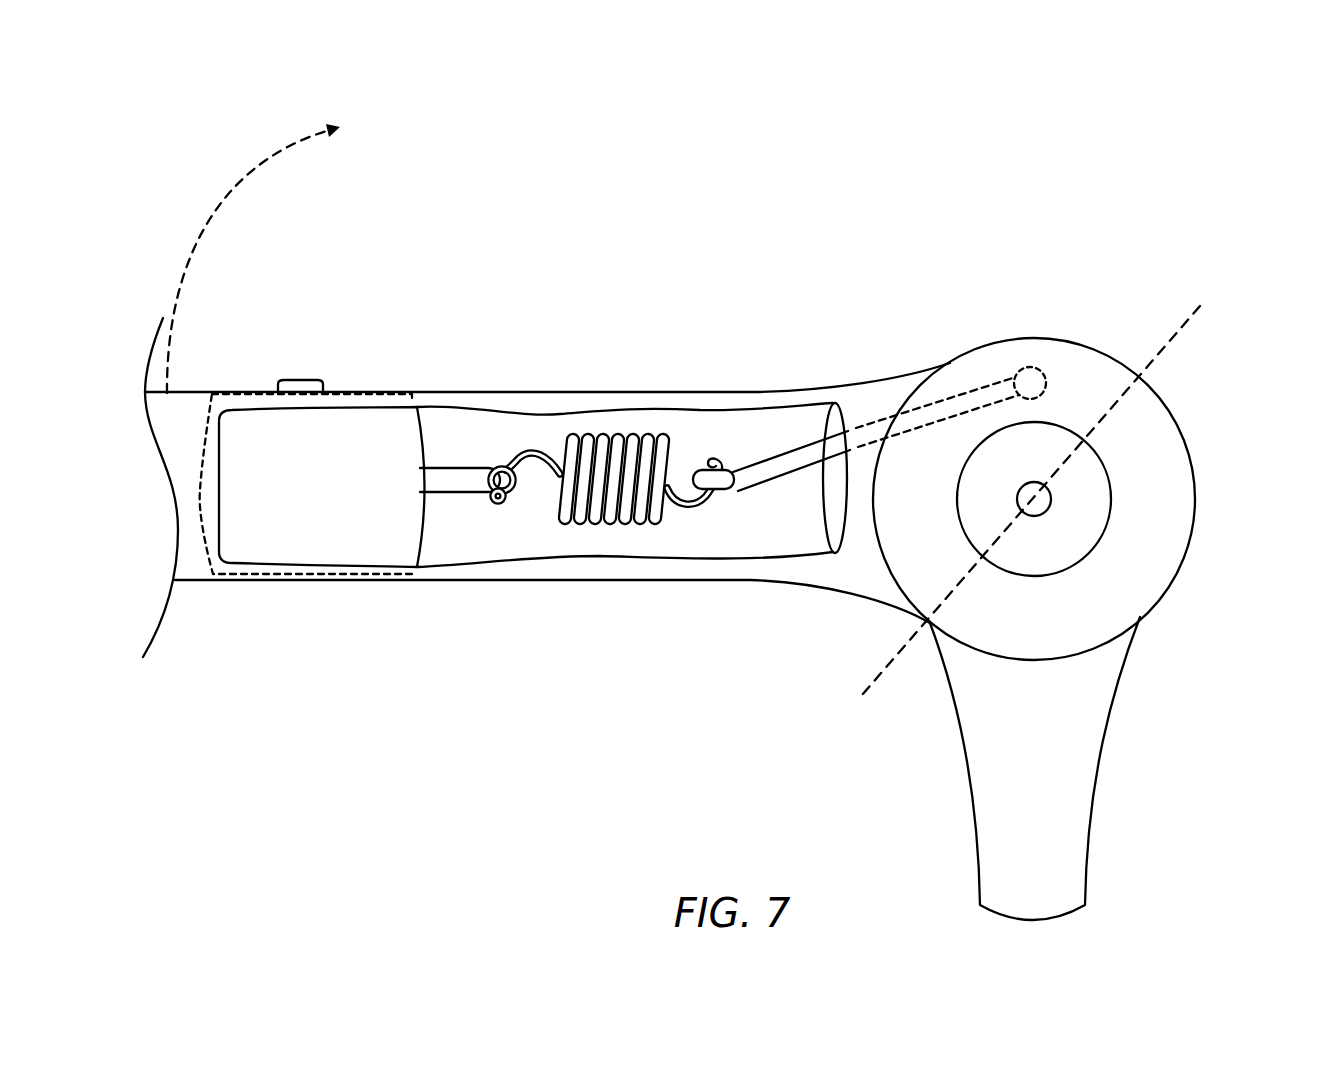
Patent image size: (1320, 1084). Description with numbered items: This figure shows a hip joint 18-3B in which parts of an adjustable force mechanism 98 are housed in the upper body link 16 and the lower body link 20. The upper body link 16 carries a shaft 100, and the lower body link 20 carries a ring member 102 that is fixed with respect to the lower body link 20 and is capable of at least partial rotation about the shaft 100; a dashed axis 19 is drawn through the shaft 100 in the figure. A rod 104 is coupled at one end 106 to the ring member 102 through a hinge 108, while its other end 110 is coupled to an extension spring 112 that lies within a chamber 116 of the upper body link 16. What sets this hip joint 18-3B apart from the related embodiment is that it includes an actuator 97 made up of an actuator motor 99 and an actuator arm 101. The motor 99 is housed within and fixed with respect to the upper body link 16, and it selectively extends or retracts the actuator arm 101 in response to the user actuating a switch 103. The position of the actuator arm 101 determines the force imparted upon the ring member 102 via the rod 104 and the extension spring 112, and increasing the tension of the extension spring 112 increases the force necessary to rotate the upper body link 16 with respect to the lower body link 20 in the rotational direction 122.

The upper body link 16 is at (188, 400).
The axis of rotation 19 is at (1188, 325).
The lower body link 20 is at (1077, 843).
The actuator 97 is at (202, 597).
The adjustable force mechanism 98 is at (225, 278).
The actuator motor 99 is at (243, 441).
The shaft 100 is at (1080, 518).
The actuator arm 101 is at (452, 487).
The ring member 102 is at (1133, 607).
The switch 103 is at (298, 385).
The rod 104 is at (805, 455).
The one end of the rod 106 is at (1020, 362).
The hinge 108 is at (1047, 383).
The another end of the rod 110 is at (718, 500).
The extension spring 112 is at (620, 518).
The chamber 116 is at (470, 433).
The rotational direction 122 is at (212, 206).
The hip joint 18-3B is at (1110, 130).